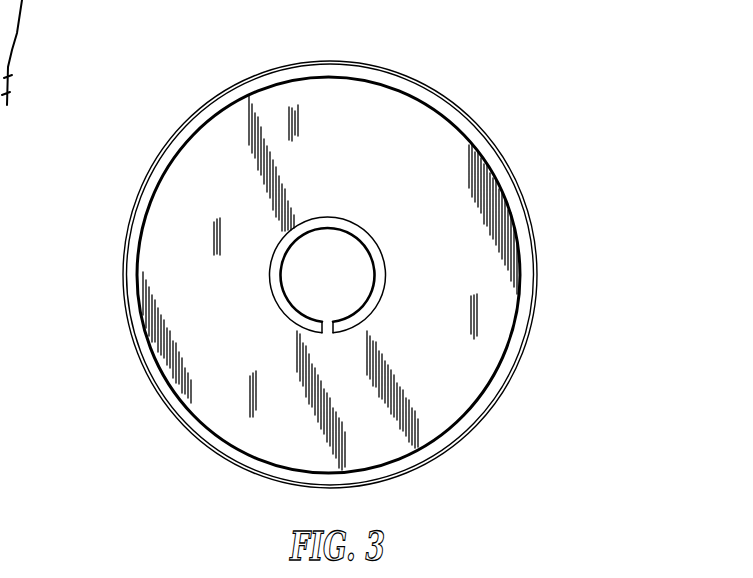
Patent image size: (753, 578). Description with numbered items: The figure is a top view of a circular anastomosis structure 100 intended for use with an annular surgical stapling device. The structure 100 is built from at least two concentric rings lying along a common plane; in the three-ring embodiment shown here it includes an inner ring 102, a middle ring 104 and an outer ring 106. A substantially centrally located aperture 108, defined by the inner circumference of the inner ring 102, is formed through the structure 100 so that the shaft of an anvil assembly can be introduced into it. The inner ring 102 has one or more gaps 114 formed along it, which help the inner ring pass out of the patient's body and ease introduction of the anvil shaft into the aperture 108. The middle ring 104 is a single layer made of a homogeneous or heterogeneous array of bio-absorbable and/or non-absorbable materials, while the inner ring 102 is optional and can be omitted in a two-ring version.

The circular anastomosis structure 100 is at (103, 229).
The inner ring 102 is at (382, 267).
The middle ring 104 is at (437, 175).
The outer ring 106 is at (450, 110).
The aperture 108 is at (338, 287).
The gap 114 is at (330, 338).